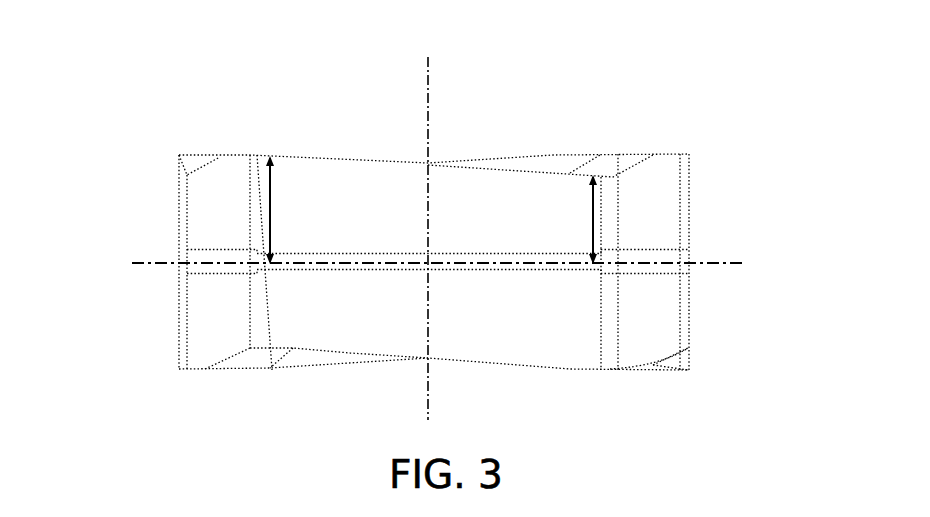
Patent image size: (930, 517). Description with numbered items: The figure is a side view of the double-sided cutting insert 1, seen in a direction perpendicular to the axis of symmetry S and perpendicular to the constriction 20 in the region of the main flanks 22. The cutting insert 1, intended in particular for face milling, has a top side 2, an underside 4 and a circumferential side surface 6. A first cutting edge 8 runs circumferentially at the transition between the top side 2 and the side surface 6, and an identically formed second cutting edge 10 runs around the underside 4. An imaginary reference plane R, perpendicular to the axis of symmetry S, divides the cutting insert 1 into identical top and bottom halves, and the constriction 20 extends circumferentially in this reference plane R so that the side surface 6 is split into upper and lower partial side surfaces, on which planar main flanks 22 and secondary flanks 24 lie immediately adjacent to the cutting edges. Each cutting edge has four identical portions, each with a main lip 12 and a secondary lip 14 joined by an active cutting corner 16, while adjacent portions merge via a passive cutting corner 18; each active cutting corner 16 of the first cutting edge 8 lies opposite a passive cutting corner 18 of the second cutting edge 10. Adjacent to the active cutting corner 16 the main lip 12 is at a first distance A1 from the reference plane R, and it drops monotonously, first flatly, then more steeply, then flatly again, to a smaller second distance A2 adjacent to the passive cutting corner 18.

The double-sided cutting insert 1 is at (138, 63).
The top side 2 is at (612, 163).
The underside 4 is at (307, 362).
The circumferential side surface 6 is at (178, 232).
The first cutting edge 8 is at (177, 155).
The second cutting edge 10 is at (688, 370).
The main lip 12 is at (365, 160).
The secondary lip 14 is at (227, 155).
The active cutting corner 16 is at (257, 157).
The passive cutting corner 18 is at (608, 177).
The constriction 20 is at (652, 272).
The main flank 22 is at (485, 217).
The secondary flank 24 is at (635, 307).
The first distance A1 is at (272, 183).
The second distance A2 is at (593, 215).
The axis of symmetry S is at (428, 110).
The reference plane R is at (715, 262).